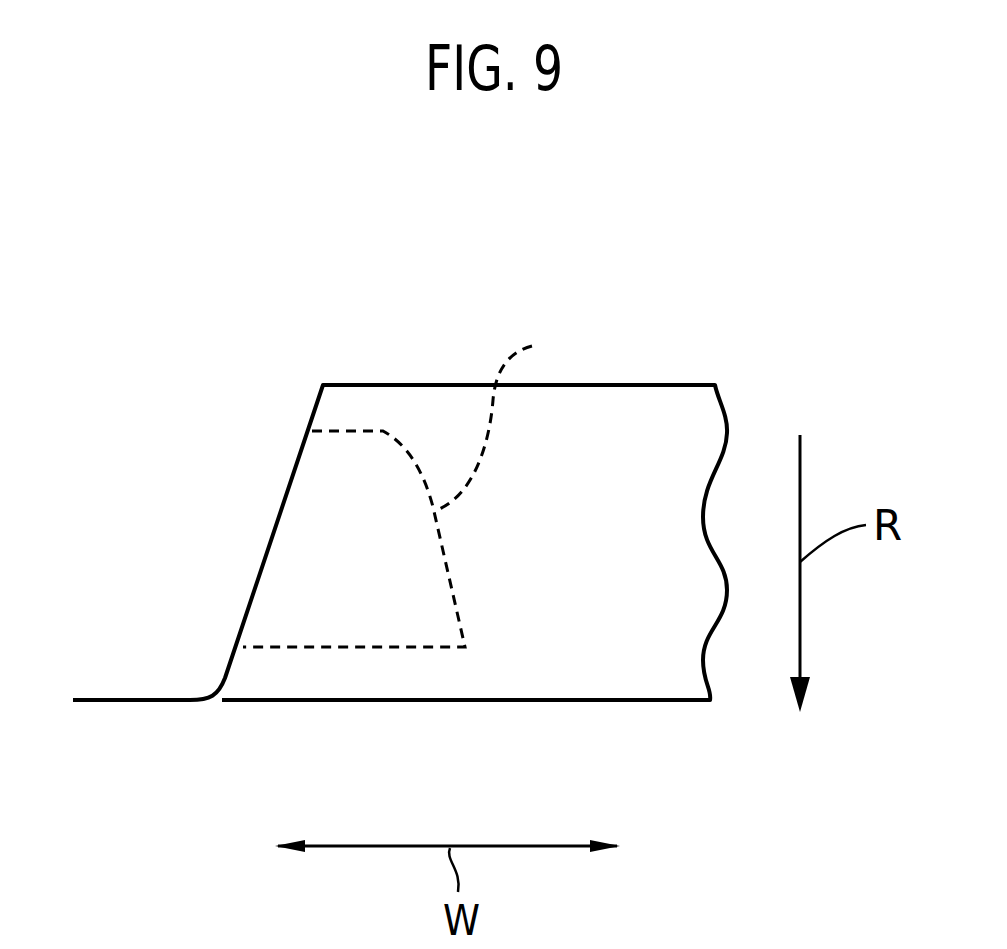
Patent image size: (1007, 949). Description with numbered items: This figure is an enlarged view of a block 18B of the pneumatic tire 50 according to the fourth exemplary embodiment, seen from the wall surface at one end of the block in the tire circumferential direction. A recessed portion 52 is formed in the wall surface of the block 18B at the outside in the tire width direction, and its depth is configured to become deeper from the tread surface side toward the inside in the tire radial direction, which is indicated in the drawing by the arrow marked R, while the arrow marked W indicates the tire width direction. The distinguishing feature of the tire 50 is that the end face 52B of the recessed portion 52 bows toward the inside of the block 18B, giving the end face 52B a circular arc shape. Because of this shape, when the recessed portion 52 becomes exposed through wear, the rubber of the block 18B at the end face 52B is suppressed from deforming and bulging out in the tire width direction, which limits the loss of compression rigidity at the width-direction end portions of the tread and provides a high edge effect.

The pneumatic tire 50 is at (218, 307).
The block 18B is at (422, 385).
The recessed portion 52 is at (345, 552).
The end face 52B is at (528, 415).